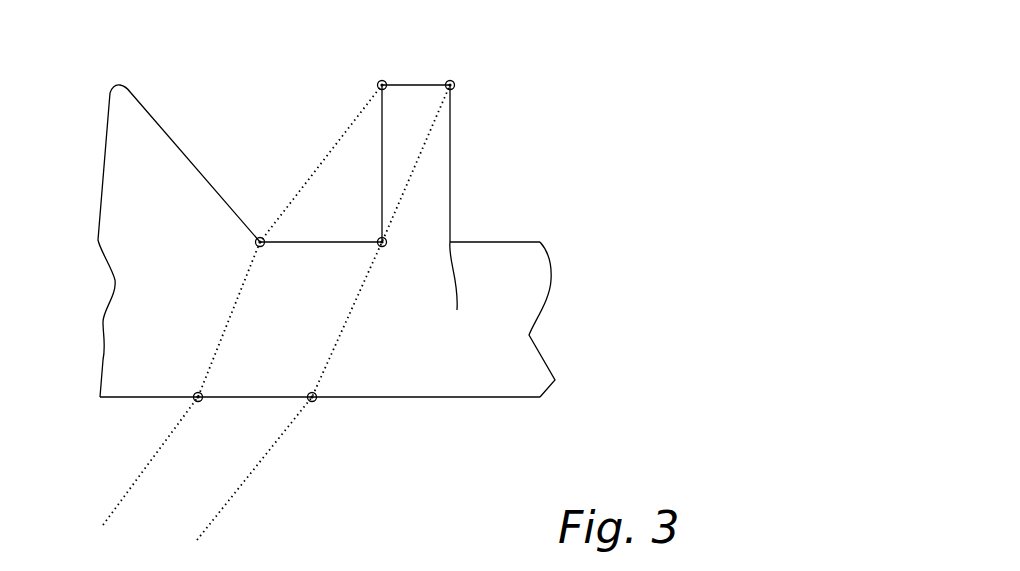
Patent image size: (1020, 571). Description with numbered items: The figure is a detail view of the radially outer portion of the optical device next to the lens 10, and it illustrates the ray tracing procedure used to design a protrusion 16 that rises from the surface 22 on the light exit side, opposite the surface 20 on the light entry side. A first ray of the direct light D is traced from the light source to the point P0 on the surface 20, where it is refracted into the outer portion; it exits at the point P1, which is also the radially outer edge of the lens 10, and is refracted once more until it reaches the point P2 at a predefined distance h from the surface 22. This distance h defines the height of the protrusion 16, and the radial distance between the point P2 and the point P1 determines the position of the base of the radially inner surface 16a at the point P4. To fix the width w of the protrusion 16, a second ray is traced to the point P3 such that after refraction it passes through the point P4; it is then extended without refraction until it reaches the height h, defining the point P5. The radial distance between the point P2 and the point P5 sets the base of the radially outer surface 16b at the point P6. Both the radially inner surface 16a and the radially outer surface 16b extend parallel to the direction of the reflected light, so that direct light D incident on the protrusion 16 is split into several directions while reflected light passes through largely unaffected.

The lens 10 is at (108, 140).
The protrusion 16 is at (422, 125).
The radially inner surface 16a is at (382, 130).
The radially outer surface 16b is at (453, 140).
The surface 20 is at (470, 398).
The surface 22 is at (513, 240).
The point P0 is at (183, 384).
The point P1 is at (241, 248).
The point P2 is at (365, 78).
The point P3 is at (334, 384).
The point P4 is at (399, 257).
The point P5 is at (469, 76).
The point P6 is at (454, 295).
The direct light D is at (261, 312).
The width w is at (423, 71).
The height h is at (368, 164).